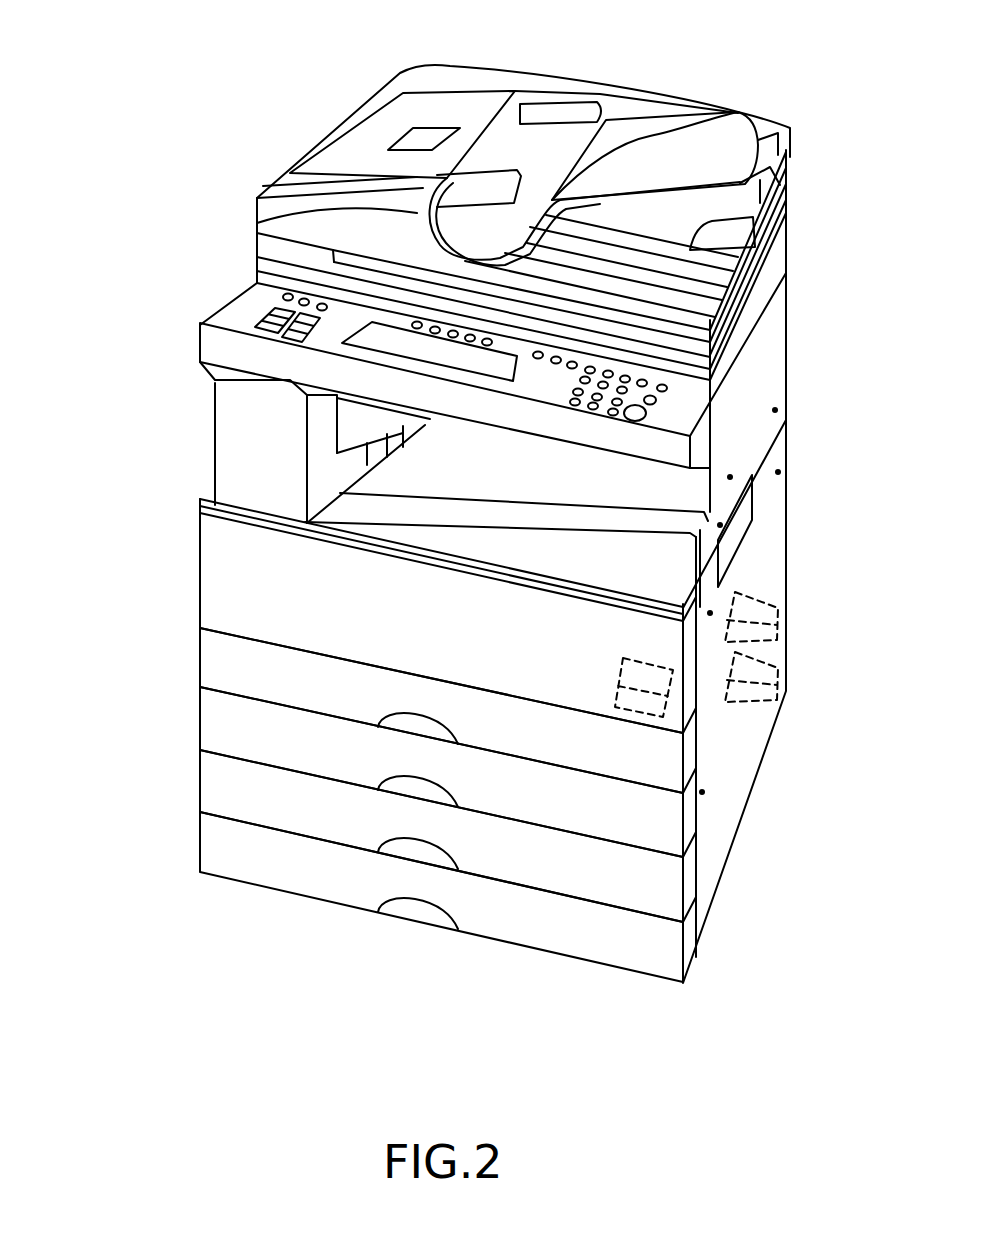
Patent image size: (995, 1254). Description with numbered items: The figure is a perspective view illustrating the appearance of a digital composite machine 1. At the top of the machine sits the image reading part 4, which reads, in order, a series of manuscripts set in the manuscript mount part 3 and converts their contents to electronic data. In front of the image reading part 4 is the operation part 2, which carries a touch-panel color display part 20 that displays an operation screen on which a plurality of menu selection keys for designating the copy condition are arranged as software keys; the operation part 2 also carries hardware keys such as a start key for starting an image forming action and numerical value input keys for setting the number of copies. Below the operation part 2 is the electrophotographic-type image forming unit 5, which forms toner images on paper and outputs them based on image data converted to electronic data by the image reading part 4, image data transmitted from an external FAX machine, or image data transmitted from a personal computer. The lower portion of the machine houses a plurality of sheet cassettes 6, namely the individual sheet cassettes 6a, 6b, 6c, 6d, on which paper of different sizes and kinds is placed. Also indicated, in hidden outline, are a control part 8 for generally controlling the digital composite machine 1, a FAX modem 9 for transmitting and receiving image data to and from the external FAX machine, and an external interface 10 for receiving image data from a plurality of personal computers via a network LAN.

The digital composite machine 1 is at (246, 121).
The operation part 2 is at (253, 298).
The manuscript mount part 3 is at (647, 137).
The image reading part 4 is at (742, 316).
The image forming unit 5 is at (213, 581).
The sheet cassettes 6 is at (62, 630).
The sheet cassette 6a is at (220, 672).
The sheet cassette 6b is at (220, 730).
The sheet cassette 6c is at (220, 793).
The sheet cassette 6d is at (220, 847).
The control part 8 is at (618, 672).
The FAX modem 9 is at (787, 632).
The external interface 10 is at (787, 690).
The color display part 20 is at (378, 336).